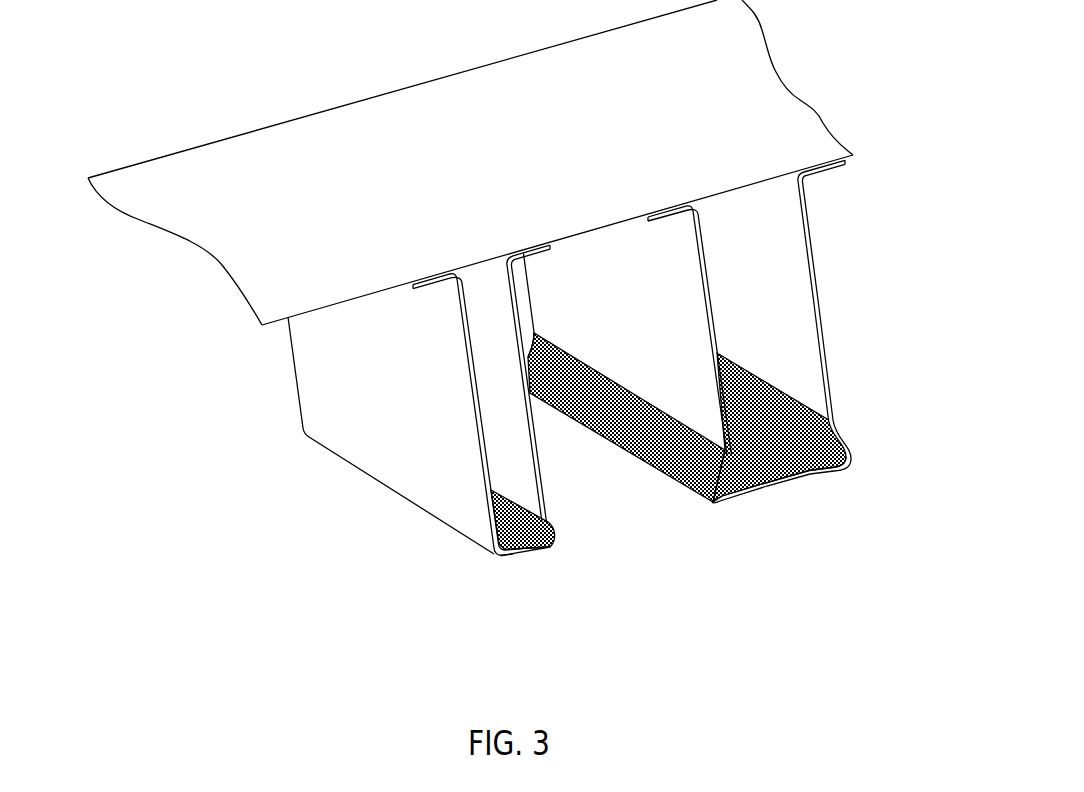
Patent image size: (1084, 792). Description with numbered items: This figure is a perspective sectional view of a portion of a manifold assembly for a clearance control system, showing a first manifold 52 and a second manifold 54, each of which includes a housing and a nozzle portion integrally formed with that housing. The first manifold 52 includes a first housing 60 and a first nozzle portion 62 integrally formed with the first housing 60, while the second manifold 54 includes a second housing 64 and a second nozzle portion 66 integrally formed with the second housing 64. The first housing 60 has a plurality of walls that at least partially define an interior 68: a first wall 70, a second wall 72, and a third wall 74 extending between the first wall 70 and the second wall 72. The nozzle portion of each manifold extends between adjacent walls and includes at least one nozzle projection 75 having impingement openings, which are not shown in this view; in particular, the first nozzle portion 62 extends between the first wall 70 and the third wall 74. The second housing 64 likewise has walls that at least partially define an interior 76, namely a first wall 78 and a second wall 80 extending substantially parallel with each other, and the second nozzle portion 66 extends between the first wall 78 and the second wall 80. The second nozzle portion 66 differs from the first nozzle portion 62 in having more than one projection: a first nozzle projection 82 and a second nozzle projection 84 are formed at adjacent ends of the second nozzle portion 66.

The first manifold 52 is at (310, 400).
The second manifold 54 is at (811, 225).
The first housing 60 is at (465, 431).
The first nozzle portion 62 is at (562, 556).
The second housing 64 is at (785, 360).
The second nozzle portion 66 is at (805, 501).
The interior 68 is at (524, 494).
The first wall 70 is at (527, 453).
The second wall 72 is at (423, 465).
The third wall 74 is at (513, 558).
The nozzle projection 75 is at (548, 550).
The interior 76 is at (799, 369).
The first wall 78 is at (673, 380).
The second wall 80 is at (808, 352).
The first nozzle projection 82 is at (713, 505).
The second nozzle projection 84 is at (852, 463).